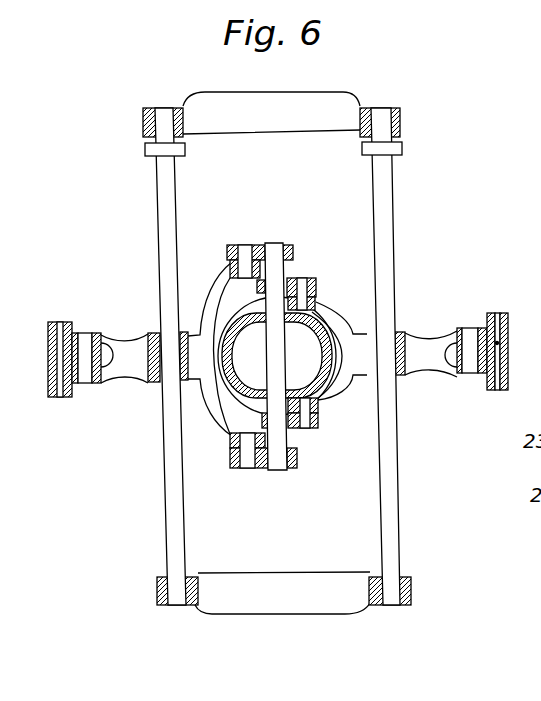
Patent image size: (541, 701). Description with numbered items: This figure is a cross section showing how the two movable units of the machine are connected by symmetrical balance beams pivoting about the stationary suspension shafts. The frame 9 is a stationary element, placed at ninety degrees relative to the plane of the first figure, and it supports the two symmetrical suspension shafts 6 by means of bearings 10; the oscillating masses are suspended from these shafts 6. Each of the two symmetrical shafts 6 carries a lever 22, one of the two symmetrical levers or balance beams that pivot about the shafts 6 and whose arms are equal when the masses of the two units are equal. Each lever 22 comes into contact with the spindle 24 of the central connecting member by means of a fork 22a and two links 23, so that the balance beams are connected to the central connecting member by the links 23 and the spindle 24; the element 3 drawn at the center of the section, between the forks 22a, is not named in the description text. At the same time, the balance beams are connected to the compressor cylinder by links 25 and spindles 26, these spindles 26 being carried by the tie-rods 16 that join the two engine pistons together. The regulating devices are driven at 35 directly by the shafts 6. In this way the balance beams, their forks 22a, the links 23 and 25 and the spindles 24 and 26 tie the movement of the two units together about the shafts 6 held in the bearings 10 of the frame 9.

The ball housing 3 is at (227, 357).
The shaft 6 is at (163, 250).
The frame 9 is at (323, 105).
The bearing 10 is at (401, 122).
The tie-rod 16 is at (500, 343).
The lever 22 is at (127, 363).
The fork 22a is at (334, 321).
The link 23 is at (233, 246).
The spindle 24 is at (274, 244).
The link 25 is at (452, 356).
The spindle 26 is at (497, 381).
The drive of the regulating devices 35 is at (396, 150).